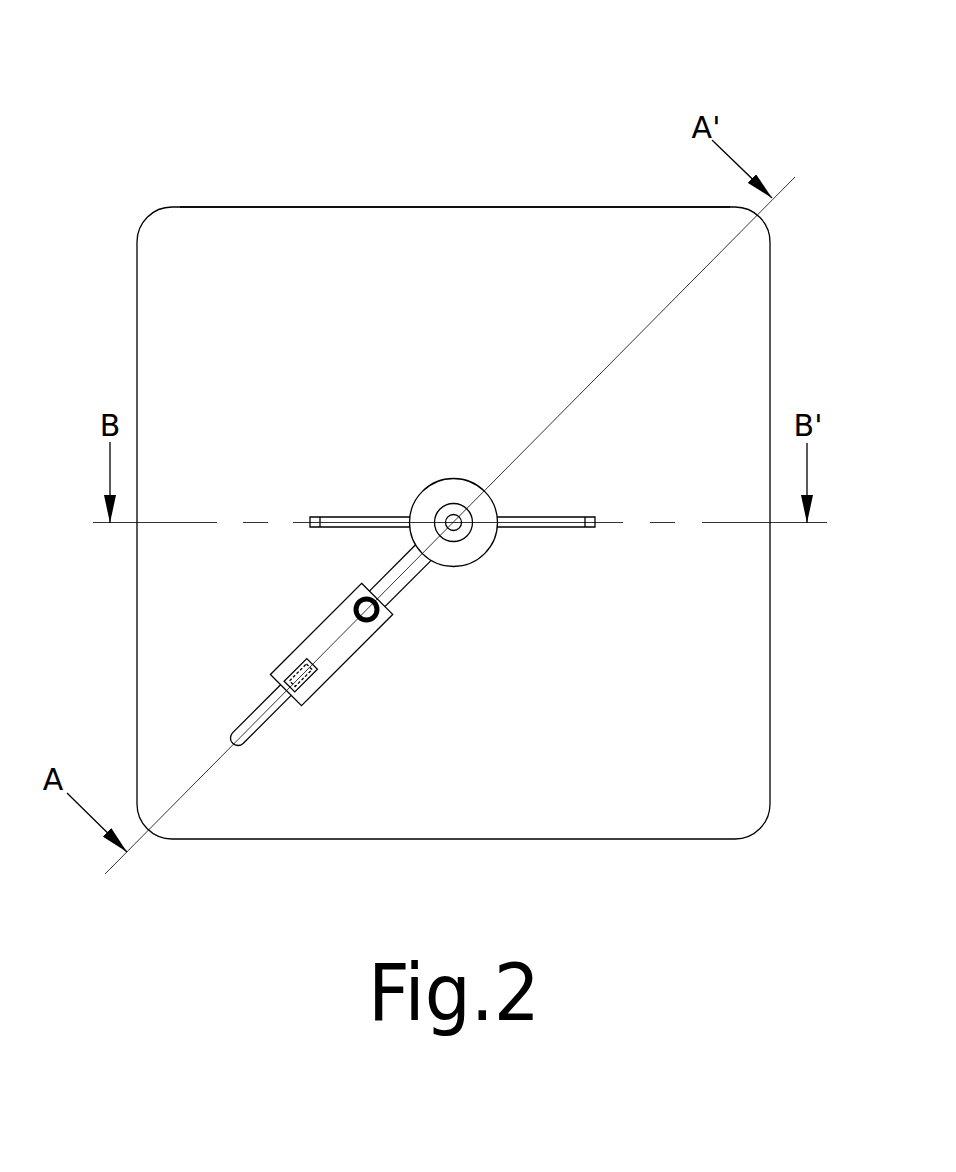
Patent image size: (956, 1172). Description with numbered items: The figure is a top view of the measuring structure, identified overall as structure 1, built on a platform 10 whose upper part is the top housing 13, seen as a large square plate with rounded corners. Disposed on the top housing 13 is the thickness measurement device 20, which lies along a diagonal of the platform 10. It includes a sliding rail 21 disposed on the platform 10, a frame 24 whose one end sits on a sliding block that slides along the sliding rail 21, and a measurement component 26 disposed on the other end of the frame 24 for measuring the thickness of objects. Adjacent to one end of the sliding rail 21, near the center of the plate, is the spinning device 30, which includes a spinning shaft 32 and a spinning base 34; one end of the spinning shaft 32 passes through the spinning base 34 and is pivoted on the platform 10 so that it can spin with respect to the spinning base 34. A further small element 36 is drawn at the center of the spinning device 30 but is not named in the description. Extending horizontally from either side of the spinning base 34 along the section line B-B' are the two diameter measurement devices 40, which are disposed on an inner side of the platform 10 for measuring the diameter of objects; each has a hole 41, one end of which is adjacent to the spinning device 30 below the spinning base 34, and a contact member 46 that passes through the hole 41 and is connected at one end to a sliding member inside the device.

The plate 1 is at (783, 87).
The platform 10 is at (385, 108).
The top housing 13 is at (505, 207).
The thickness measurement device 20 is at (288, 658).
The sliding rail 21 is at (268, 722).
The frame 24 is at (315, 632).
The measurement component 26 is at (357, 596).
The spinning device 30 is at (477, 430).
The spinning shaft 32 is at (455, 516).
The spinning base 34 is at (496, 503).
The bearing ring 36 is at (440, 510).
The diameter measurement device 40 is at (466, 559).
The hole 41 is at (350, 517).
The contact member 46 is at (313, 517).